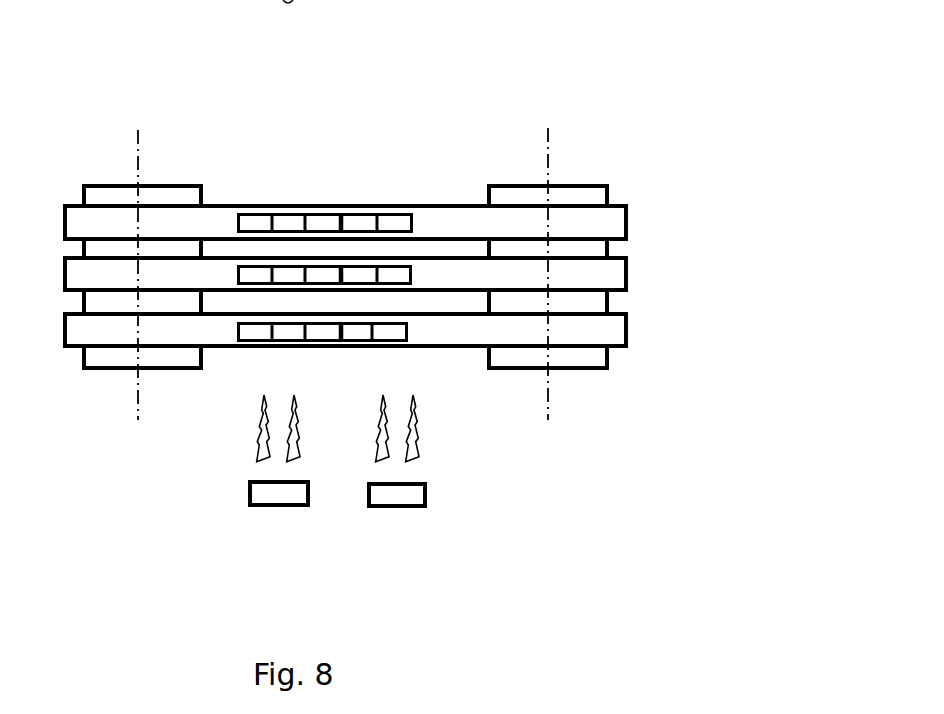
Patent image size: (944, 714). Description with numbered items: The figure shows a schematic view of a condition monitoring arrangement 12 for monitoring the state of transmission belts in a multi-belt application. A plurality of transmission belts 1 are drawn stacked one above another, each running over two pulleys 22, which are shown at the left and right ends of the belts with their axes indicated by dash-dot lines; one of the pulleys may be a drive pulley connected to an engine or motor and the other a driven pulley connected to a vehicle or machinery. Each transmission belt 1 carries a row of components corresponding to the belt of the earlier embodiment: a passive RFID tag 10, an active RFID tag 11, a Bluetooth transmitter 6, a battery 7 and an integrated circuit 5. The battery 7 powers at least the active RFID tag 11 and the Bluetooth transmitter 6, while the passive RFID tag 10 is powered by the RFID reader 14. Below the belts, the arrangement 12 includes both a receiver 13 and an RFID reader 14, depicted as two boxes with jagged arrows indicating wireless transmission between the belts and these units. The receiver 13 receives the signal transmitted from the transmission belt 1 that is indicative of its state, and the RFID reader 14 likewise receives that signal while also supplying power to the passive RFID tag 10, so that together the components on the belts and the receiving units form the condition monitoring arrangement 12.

The transmission belt 1 is at (610, 222).
The integrated circuit 5 is at (385, 220).
The Bluetooth transmitter 6 is at (317, 222).
The battery 7 is at (346, 222).
The passive RFID tag 10 is at (252, 222).
The active RFID tag 11 is at (283, 222).
The condition monitoring arrangement 12 is at (529, 76).
The receiver 13 is at (275, 500).
The RFID reader 14 is at (395, 500).
The pulley 22 is at (93, 197).